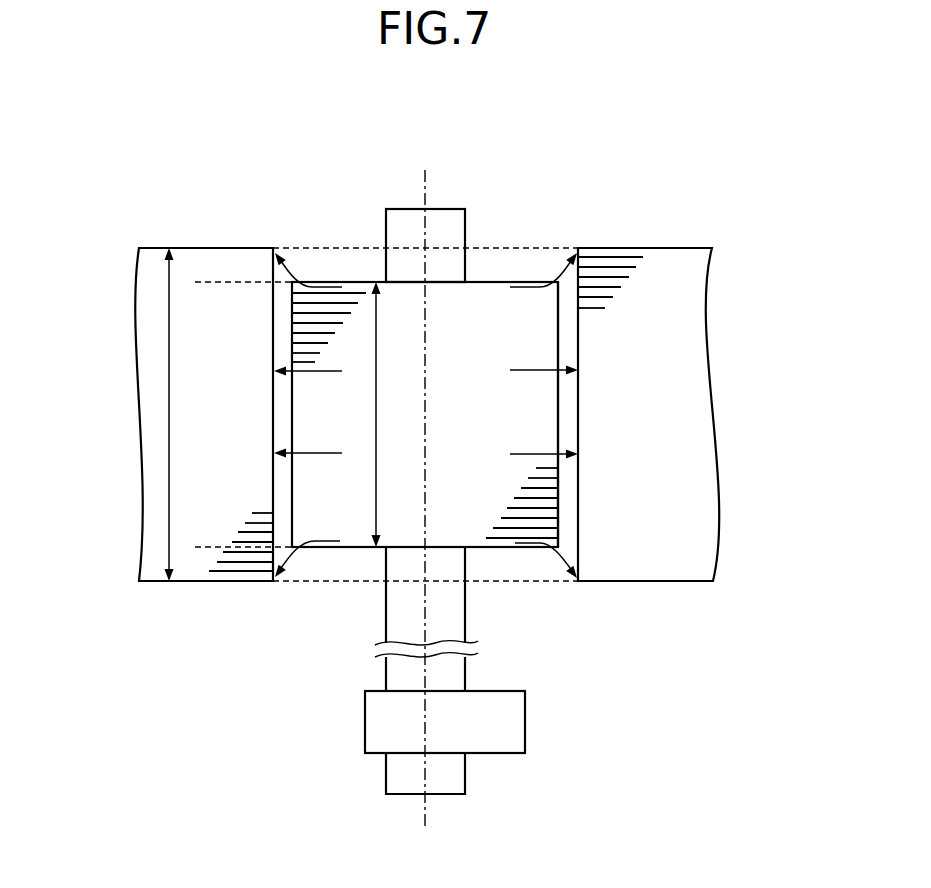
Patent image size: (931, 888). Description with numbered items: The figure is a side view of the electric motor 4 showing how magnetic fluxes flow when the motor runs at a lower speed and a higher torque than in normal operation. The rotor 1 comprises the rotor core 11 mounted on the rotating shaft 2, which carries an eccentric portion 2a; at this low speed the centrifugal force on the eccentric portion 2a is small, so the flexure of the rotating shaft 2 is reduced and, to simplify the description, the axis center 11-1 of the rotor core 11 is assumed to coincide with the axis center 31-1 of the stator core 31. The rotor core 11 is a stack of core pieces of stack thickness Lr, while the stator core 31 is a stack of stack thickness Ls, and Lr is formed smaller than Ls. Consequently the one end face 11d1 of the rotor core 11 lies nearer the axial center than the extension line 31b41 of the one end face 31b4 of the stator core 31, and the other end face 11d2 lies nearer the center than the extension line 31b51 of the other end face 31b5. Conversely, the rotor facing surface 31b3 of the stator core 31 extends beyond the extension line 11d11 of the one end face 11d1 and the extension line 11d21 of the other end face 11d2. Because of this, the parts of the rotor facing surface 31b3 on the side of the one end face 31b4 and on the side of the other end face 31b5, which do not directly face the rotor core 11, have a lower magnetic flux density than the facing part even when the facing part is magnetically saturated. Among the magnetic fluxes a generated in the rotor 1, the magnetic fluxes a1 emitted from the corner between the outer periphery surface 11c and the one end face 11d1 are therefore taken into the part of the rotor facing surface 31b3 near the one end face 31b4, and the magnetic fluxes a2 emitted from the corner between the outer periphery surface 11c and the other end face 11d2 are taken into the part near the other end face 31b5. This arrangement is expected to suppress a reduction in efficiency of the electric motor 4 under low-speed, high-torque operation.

The electric motor 4 is at (432, 134).
The rotating shaft 2 is at (453, 209).
The eccentric portion 2a is at (525, 720).
The rotor 1 is at (576, 319).
The rotor core 11 is at (488, 415).
The outer periphery surface 11c is at (560, 433).
The one end face 11d1 is at (336, 282).
The other end face 11d2 is at (350, 548).
The extension line of the one end face 11d11 is at (218, 282).
The extension line of the other end face 11d21 is at (210, 548).
The axis center of the rotor core 11-1 is at (425, 190).
The axis center of the stator core 31-1 is at (425, 190).
The stator core 31 is at (675, 308).
The rotor facing surface 31b3 is at (580, 350).
The one end face 31b4 is at (660, 248).
The extension line of the one end face 31b41 is at (530, 248).
The other end face 31b5 is at (660, 581).
The extension line of the other end face 31b51 is at (515, 581).
The stack thickness of the stator core Ls is at (168, 413).
The stack thickness of the rotor core Lr is at (376, 412).
The magnetic fluxes a is at (338, 371).
The magnetic fluxes a1 is at (305, 280).
The magnetic fluxes a2 is at (330, 545).